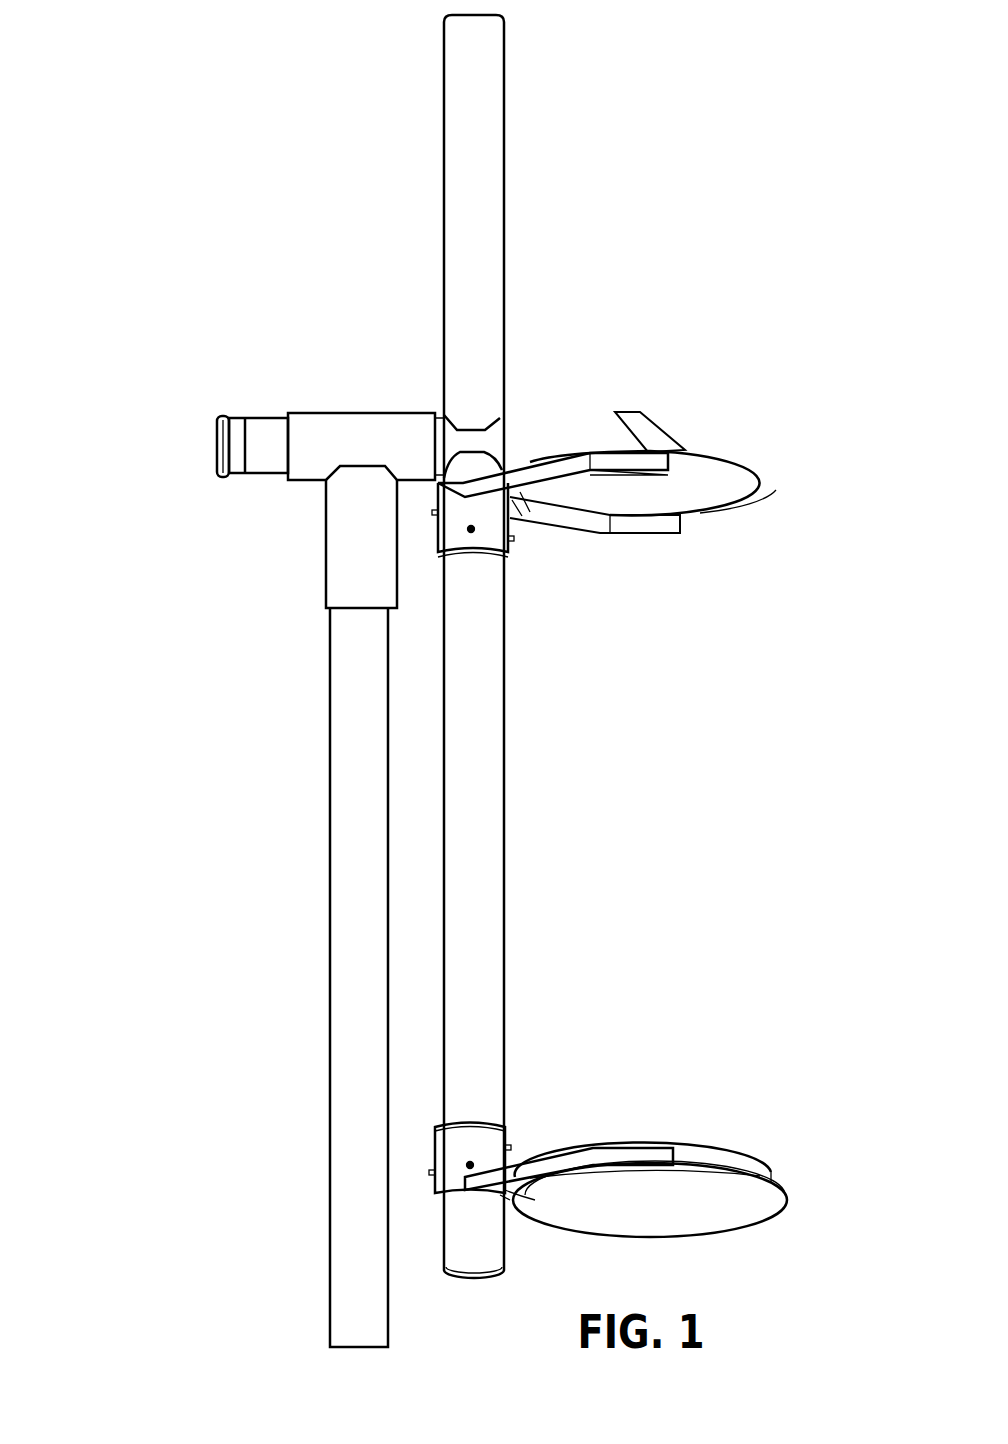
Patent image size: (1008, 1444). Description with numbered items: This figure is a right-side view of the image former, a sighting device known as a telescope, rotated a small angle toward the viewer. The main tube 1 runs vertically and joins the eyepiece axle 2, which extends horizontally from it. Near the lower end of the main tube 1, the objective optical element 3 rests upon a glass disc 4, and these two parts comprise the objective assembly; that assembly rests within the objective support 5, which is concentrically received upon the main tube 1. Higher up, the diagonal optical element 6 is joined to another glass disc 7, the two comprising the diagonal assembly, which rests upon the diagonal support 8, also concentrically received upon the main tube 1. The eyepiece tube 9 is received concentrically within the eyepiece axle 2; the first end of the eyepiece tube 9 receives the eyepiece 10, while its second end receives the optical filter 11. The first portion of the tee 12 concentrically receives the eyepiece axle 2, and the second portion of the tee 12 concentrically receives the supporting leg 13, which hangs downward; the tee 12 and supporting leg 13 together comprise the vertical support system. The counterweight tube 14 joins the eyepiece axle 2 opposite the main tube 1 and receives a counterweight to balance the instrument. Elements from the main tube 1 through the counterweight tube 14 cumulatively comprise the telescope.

The main tube 1 is at (515, 835).
The eyepiece axle 2 is at (273, 408).
The objective optical element 3 is at (750, 1140).
The glass disc 4 is at (793, 1193).
The objective support 5 is at (520, 1150).
The diagonal optical element 6 is at (668, 420).
The glass disc 7 is at (790, 463).
The diagonal support 8 is at (523, 538).
The eyepiece tube 9 is at (238, 408).
The eyepiece 10 is at (203, 452).
The optical filter 11 is at (515, 447).
The tee 12 is at (349, 402).
The supporting leg 13 is at (307, 917).
The counterweight tube 14 is at (515, 82).